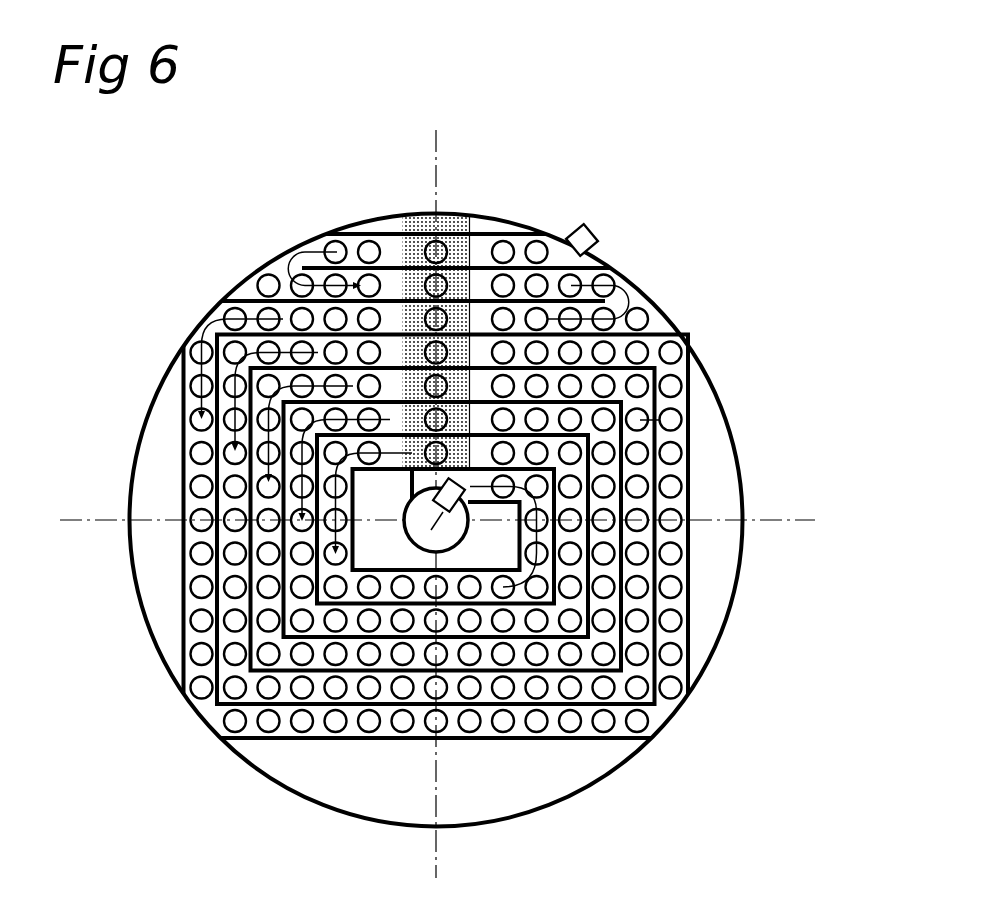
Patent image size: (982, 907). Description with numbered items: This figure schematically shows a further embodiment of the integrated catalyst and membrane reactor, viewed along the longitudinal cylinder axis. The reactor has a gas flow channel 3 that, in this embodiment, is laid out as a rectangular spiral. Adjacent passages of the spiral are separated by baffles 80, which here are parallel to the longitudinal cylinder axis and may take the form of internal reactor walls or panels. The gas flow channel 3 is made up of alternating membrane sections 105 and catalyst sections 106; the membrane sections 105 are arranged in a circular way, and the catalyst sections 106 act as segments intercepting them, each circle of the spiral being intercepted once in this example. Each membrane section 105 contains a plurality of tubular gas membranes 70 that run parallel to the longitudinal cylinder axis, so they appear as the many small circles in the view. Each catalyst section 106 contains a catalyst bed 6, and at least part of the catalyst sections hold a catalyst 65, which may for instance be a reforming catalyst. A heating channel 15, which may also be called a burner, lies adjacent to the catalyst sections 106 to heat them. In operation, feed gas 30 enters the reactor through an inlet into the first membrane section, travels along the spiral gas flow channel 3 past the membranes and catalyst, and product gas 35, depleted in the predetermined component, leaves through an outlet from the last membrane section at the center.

The gas flow channel 3 is at (660, 325).
The catalyst bed 6 is at (430, 322).
The heating channel 15 is at (403, 317).
The feed gas 30 is at (593, 221).
The product gas 35 is at (415, 532).
The catalyst 65 is at (452, 208).
The tubular gas membranes 70 is at (653, 422).
The baffles 80 is at (246, 292).
The membrane sections 105 is at (680, 472).
The catalyst sections 106 is at (466, 244).